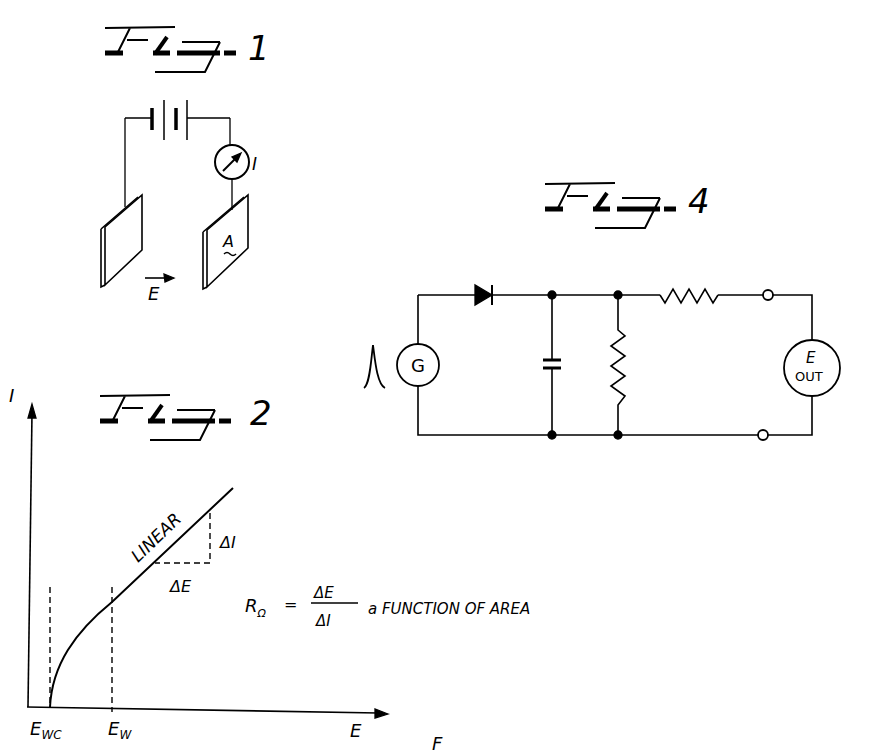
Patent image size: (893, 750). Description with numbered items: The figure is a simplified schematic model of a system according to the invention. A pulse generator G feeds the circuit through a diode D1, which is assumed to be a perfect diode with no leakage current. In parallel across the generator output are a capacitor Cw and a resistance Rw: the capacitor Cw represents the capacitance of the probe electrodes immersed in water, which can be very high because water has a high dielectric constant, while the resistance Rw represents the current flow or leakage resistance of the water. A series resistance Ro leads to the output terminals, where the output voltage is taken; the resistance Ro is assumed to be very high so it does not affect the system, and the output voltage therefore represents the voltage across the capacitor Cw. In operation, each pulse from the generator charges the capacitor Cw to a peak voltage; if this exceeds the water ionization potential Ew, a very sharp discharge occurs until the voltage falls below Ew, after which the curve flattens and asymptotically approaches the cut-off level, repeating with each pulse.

The diode D1 is at (479, 285).
The capacitor Cw is at (546, 358).
The resistance Rw is at (626, 370).
The resistance Ro is at (678, 292).